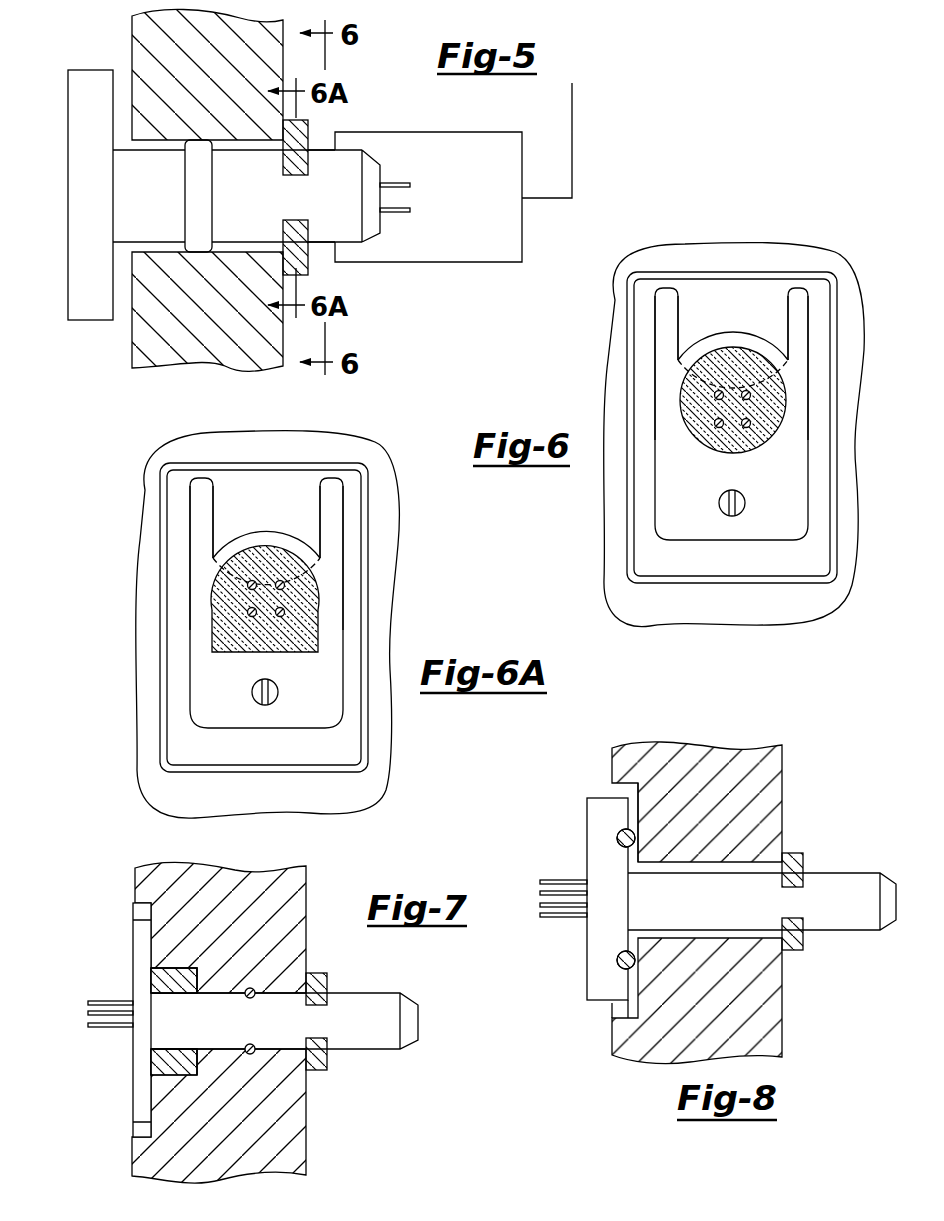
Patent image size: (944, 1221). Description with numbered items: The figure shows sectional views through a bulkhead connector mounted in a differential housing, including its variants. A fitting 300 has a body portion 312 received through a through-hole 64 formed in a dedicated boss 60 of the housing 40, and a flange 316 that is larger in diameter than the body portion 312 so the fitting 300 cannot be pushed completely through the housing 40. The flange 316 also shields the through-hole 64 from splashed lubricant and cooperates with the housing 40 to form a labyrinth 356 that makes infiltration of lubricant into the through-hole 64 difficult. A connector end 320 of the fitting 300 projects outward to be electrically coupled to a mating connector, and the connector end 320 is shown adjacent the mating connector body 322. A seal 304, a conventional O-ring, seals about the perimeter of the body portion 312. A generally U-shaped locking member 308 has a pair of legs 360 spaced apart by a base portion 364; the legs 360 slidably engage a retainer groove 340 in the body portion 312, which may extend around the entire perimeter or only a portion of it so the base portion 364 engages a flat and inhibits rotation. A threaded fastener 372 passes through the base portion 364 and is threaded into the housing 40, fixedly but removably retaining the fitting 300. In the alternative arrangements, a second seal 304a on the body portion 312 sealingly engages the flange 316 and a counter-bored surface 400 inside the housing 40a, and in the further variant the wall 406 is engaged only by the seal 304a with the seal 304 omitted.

In FIG. 5, the housing 40 is at (152, 42).
In FIG. 6, the housing 40 is at (858, 389).
In FIG. 6A, the housing 40 is at (392, 578).
In FIG. 7, the housing 40a is at (295, 1105).
In FIG. 6, the boss 60 is at (790, 278).
In FIG. 6A, the boss 60 is at (330, 465).
In FIG. 5, the through-hole 64 is at (148, 142).
In FIG. 7, the fitting 300 is at (227, 1050).
In FIG. 5, the seal 304 is at (205, 192).
In FIG. 7, the seal 304 is at (252, 988).
In FIG. 7, the seal 304a is at (170, 980).
In FIG. 8, the seal 304a is at (618, 840).
In FIG. 5, the locking member 308 is at (337, 122).
In FIG. 7, the locking member 308 is at (360, 984).
In FIG. 7, the body portion 312 is at (160, 1015).
In FIG. 8, the body portion 312 is at (655, 913).
In FIG. 5, the flange 316 is at (73, 113).
In FIG. 7, the flange 316 is at (135, 1078).
In FIG. 8, the flange 316 is at (598, 980).
In FIG. 5, the connector end 320 is at (370, 165).
In FIG. 5, the connector body 322 is at (465, 255).
In FIG. 5, the retainer groove 340 is at (293, 218).
In FIG. 6, the retainer groove 340 is at (733, 392).
In FIG. 6A, the retainer groove 340 is at (265, 652).
In FIG. 5, the labyrinth 356 is at (122, 322).
In FIG. 6, the legs 360 is at (790, 328).
In FIG. 6A, the legs 360 is at (198, 492).
In FIG. 6, the base portion 364 is at (686, 525).
In FIG. 6A, the base portion 364 is at (220, 712).
In FIG. 6, the threaded fastener 372 is at (747, 503).
In FIG. 6A, the threaded fastener 372 is at (280, 690).
In FIG. 7, the counter-bored surfaces 400 is at (200, 968).
In FIG. 8, the wall 406 is at (770, 832).